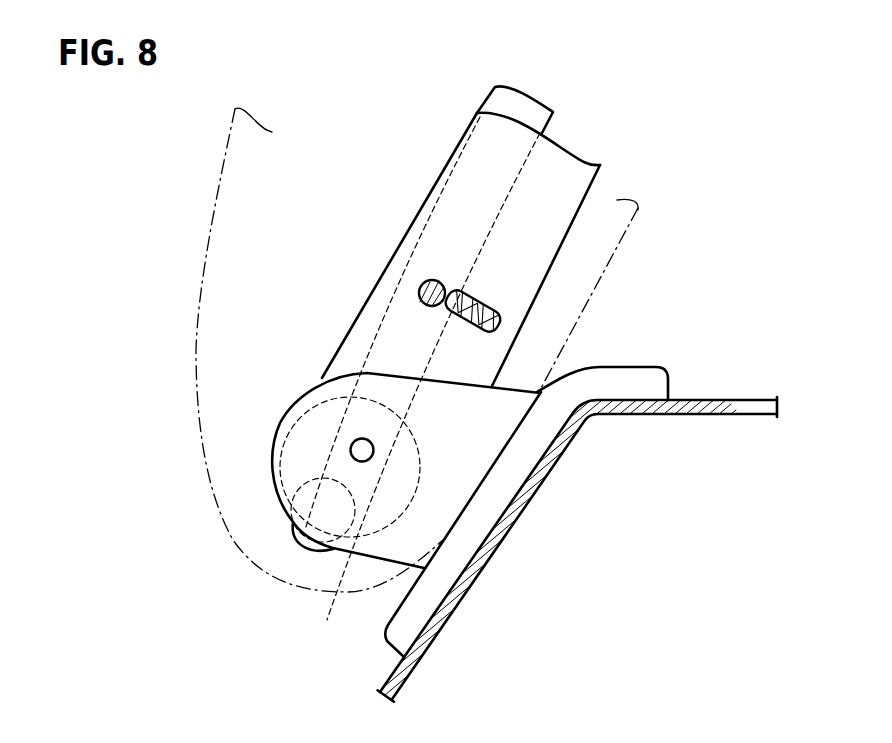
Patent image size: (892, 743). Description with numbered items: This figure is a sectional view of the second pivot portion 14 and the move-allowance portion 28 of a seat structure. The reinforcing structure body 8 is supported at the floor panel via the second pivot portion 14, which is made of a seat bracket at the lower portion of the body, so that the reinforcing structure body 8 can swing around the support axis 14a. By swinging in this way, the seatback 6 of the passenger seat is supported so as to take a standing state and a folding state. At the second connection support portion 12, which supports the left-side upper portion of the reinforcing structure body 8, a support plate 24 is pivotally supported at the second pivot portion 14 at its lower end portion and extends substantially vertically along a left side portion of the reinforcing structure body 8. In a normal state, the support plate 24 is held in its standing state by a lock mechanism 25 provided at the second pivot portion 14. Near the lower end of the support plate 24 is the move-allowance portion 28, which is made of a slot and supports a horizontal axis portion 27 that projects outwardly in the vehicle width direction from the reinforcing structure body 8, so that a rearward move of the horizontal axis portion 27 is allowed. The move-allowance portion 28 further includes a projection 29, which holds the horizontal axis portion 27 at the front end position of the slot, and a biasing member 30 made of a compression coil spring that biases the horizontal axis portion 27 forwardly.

The seatback 6 is at (203, 243).
The reinforcing structure body 8 is at (532, 120).
The second connection support portion 12 is at (592, 222).
The second pivot portion 14 is at (483, 457).
The support axis 14a is at (360, 448).
The support plate 24 is at (440, 178).
The lock mechanism 25 is at (426, 396).
The horizontal axis portion 27 is at (427, 283).
The move-allowance portion 28 is at (502, 318).
The projection 29 is at (443, 315).
The biasing member 30 is at (472, 296).